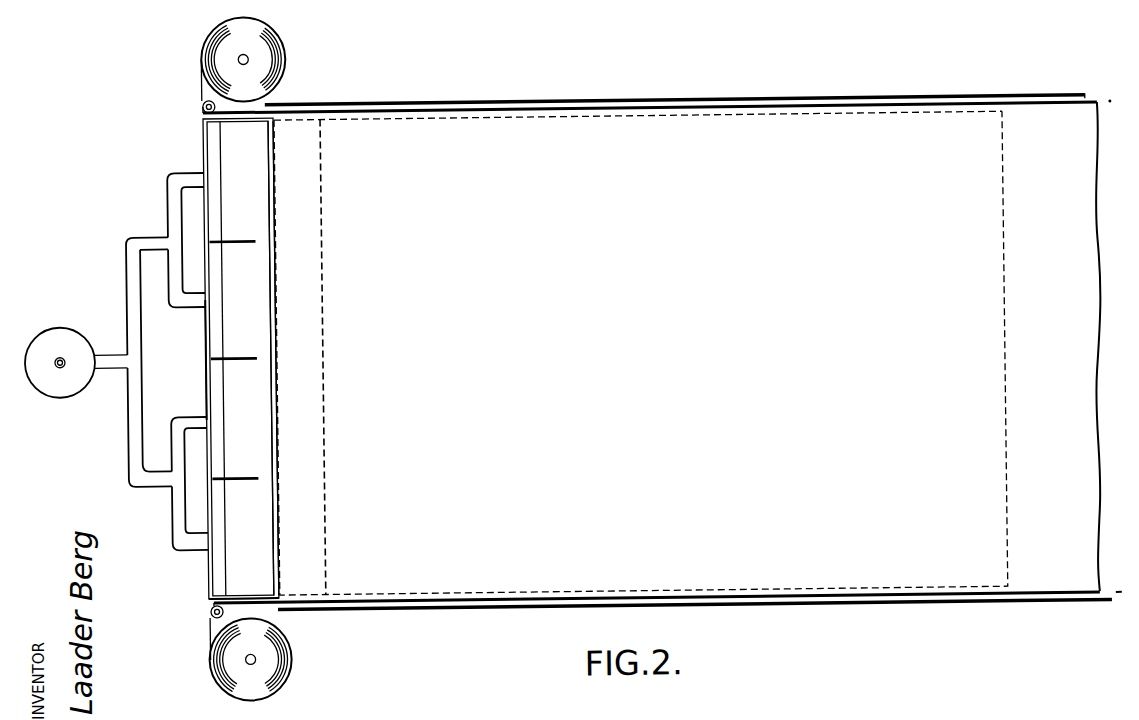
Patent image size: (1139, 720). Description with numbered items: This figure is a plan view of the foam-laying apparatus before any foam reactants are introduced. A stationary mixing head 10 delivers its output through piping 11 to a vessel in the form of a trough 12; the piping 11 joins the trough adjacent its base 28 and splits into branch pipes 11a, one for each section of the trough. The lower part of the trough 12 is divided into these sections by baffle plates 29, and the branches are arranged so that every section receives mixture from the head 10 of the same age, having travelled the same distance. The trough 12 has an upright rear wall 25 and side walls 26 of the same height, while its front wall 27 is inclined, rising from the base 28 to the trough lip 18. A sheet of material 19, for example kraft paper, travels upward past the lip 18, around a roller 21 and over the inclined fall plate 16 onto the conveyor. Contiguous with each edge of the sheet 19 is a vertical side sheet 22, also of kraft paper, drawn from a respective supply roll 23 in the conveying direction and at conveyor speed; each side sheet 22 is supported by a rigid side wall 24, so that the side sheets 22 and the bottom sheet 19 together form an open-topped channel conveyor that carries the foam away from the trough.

The mixing head 10 is at (48, 385).
The piping 11 is at (118, 417).
The branch pipe 11a is at (190, 177).
The trough 12 is at (195, 128).
The inclined fall plate 16 is at (884, 124).
The lip 18 is at (275, 450).
The sheet of material 19 is at (1084, 215).
The roller 21 is at (298, 246).
The vertical side sheet 22 is at (440, 105).
The supply roll 23 is at (284, 71).
The rigid side wall 24 is at (650, 111).
The rear wall 25 is at (205, 343).
The side wall 26 is at (232, 124).
The front wall 27 is at (262, 333).
The base 28 is at (207, 568).
The baffle plate 29 is at (224, 247).